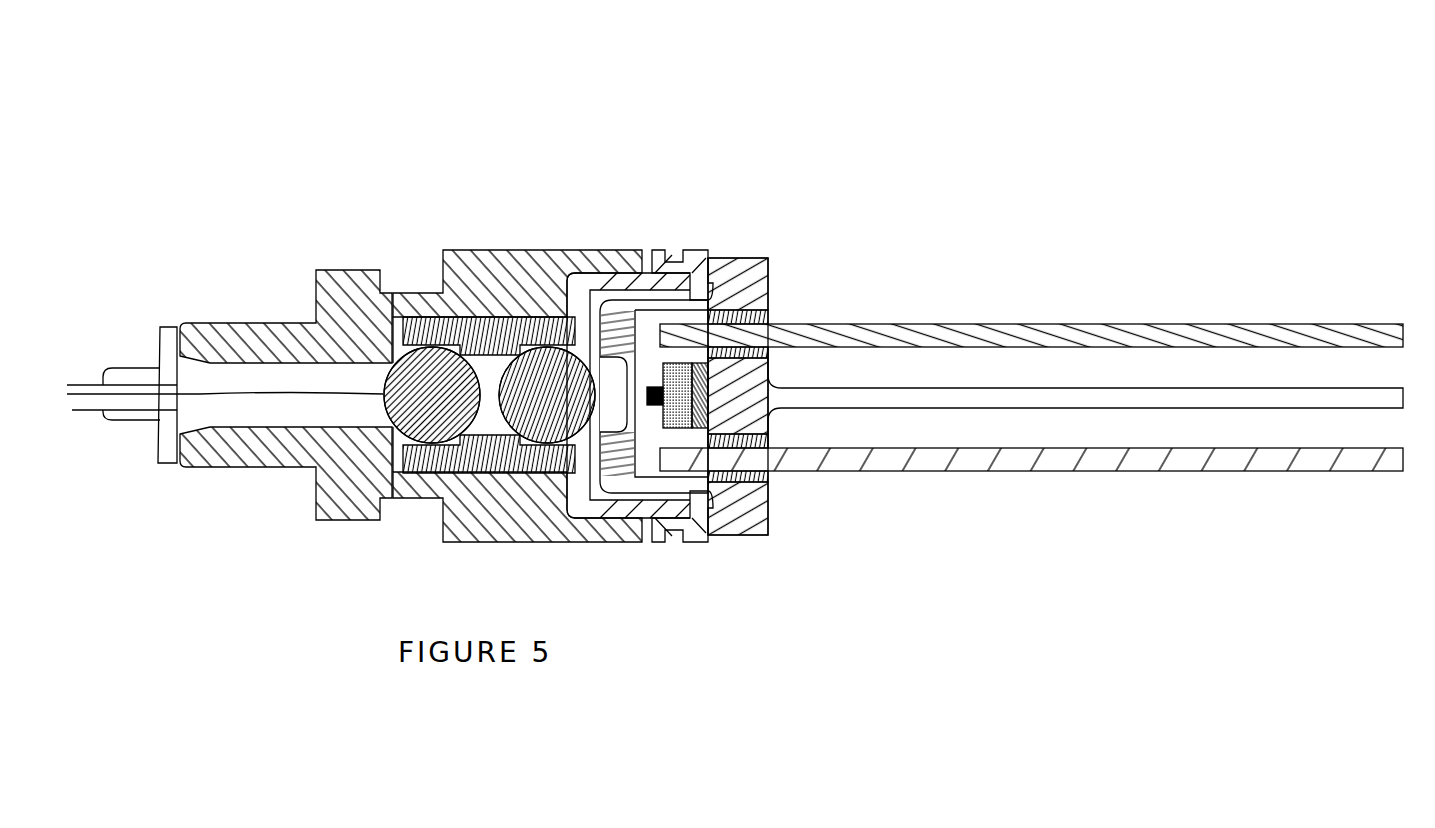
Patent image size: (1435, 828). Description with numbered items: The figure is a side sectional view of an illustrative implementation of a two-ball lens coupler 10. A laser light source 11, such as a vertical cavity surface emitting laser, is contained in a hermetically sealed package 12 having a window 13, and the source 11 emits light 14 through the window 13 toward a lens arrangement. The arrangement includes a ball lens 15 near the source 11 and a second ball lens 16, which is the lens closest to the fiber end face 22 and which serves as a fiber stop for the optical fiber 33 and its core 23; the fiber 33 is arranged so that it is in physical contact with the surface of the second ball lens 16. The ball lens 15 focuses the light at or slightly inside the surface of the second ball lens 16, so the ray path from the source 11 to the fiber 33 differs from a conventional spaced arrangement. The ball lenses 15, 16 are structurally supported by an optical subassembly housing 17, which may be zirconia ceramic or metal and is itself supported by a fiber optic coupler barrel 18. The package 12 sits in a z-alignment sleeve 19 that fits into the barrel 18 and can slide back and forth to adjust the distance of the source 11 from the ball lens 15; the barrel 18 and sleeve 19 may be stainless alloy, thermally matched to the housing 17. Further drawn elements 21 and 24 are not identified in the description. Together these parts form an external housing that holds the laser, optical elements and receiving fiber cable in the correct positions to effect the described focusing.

The coupler 10 is at (1031, 367).
The laser light source 11 is at (653, 407).
The hermetically sealed package 12 is at (738, 300).
The window 13 is at (621, 478).
The light 14 is at (608, 396).
The ball lens 15 is at (676, 448).
The ball lens 16 is at (534, 238).
The optical subassembly housing 17 is at (495, 332).
The fiber optic coupler barrel 18 is at (547, 542).
The z-alignment sleeve 19 is at (699, 246).
The flange 21 is at (146, 450).
The fiber end face 22 is at (385, 395).
The core 23 is at (258, 392).
The cable nut 24 is at (168, 467).
The optical fiber 33 is at (78, 378).